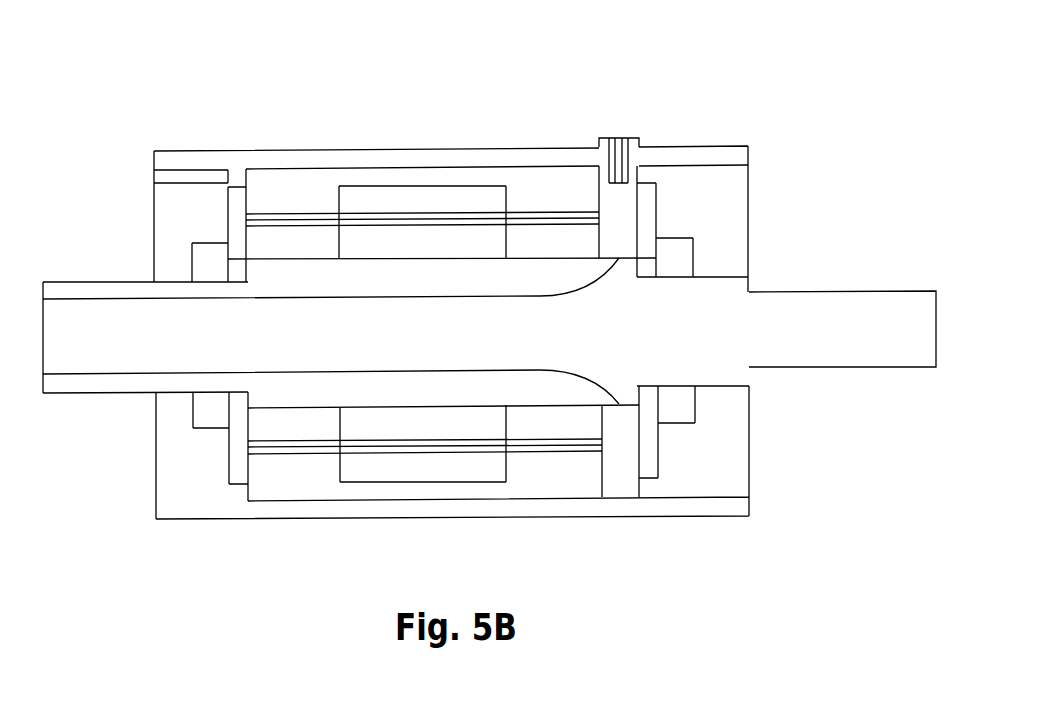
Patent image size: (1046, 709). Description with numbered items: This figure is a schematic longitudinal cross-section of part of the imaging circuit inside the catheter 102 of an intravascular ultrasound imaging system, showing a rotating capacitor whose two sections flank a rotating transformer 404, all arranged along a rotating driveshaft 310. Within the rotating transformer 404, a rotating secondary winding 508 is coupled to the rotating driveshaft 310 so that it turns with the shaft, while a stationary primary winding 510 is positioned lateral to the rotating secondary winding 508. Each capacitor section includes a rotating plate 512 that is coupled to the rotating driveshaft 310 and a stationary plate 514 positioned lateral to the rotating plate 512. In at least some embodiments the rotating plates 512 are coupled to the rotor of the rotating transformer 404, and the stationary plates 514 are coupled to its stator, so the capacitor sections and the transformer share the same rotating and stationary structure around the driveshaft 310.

The catheter 102 is at (765, 118).
The driveshaft 310 is at (102, 313).
The rotating transformer 404 is at (437, 314).
The rotating secondary winding 508 is at (409, 250).
The stationary primary winding 510 is at (454, 193).
The rotating plate 512 is at (280, 238).
The stationary plate 514 is at (323, 188).